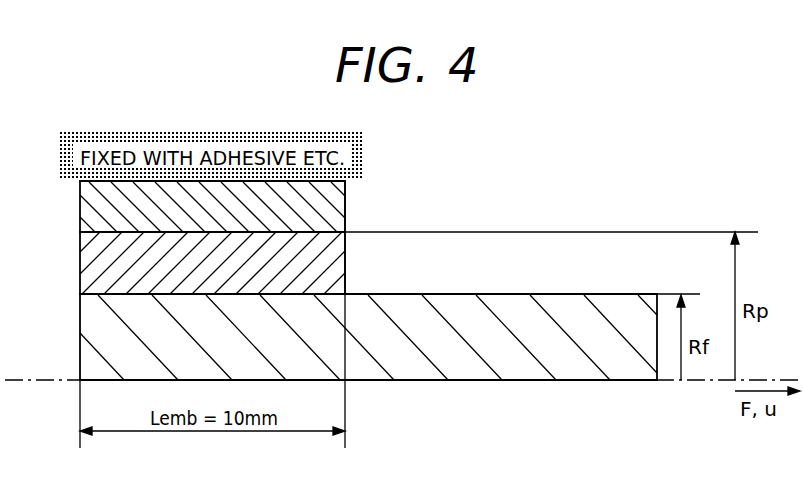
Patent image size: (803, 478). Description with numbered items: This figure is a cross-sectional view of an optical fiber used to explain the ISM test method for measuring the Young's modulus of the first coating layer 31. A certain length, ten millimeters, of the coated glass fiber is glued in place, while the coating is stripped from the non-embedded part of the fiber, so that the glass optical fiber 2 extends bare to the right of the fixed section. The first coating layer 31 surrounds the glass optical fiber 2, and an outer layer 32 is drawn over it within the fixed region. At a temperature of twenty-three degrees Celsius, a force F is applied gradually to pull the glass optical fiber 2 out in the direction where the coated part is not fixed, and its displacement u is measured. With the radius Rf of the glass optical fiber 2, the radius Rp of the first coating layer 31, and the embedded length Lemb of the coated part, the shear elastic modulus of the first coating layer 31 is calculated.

The glass optical fiber 2 is at (560, 306).
The first coating layer 31 is at (335, 267).
The second layer 32 is at (335, 203).